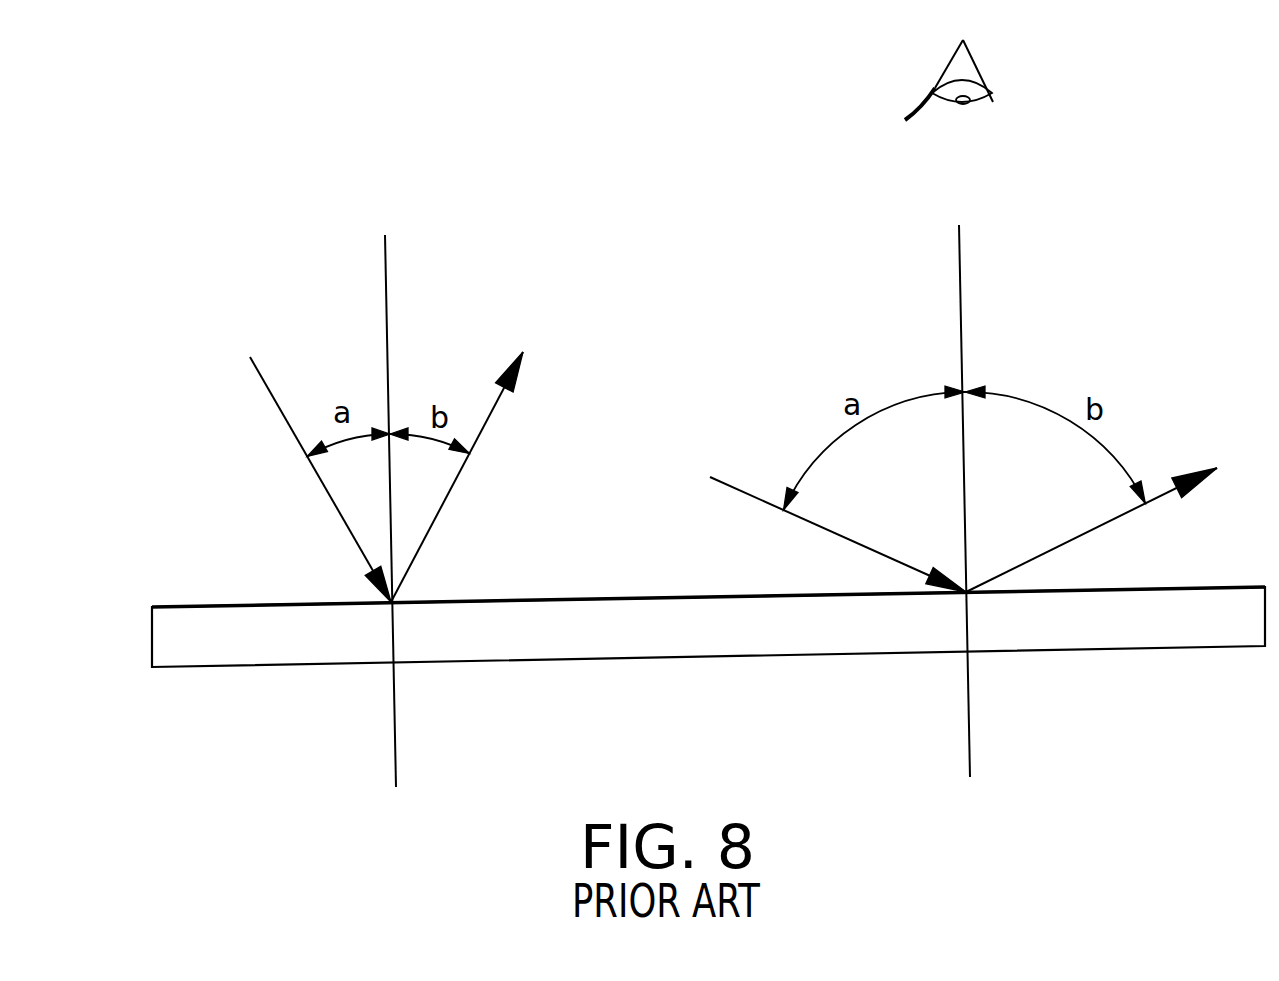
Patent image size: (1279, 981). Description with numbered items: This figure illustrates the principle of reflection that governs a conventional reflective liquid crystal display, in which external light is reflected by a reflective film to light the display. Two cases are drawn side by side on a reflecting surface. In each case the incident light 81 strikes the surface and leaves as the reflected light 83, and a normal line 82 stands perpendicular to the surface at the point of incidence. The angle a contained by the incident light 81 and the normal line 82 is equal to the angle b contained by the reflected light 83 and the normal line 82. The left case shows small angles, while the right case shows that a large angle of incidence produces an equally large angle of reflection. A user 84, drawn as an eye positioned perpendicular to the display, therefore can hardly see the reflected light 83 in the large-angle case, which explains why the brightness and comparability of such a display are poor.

The incident light 81 is at (287, 423).
The normal line 82 is at (385, 280).
The reflected light 83 is at (462, 473).
The user 84 is at (972, 73).